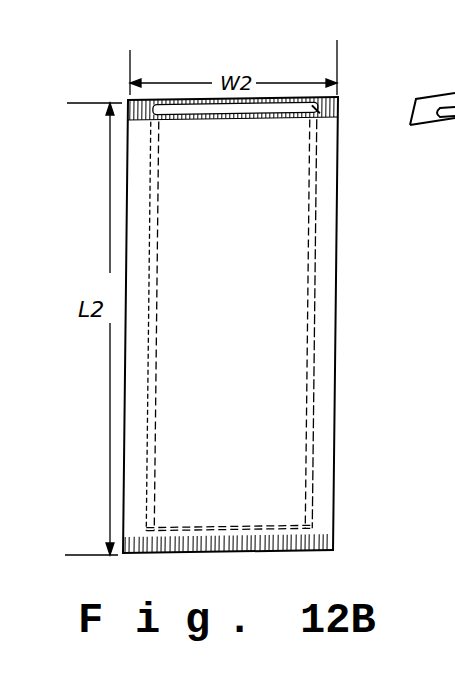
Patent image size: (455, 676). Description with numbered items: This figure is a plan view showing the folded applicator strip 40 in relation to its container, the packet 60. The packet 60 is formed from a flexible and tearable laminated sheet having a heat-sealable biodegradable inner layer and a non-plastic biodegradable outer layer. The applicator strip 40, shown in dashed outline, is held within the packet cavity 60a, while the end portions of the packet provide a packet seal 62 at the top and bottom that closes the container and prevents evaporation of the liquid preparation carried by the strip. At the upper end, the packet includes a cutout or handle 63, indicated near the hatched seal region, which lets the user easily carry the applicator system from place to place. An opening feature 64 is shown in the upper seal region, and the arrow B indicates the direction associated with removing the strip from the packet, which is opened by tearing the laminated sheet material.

The packet 60 is at (334, 460).
The packet cavity 60a is at (310, 122).
The packet seal 62 is at (132, 125).
The cutout or handle 63 is at (267, 97).
The slot opening 64 is at (243, 120).
The applicator strip 40 is at (310, 300).
The view direction arrow B is at (345, 393).